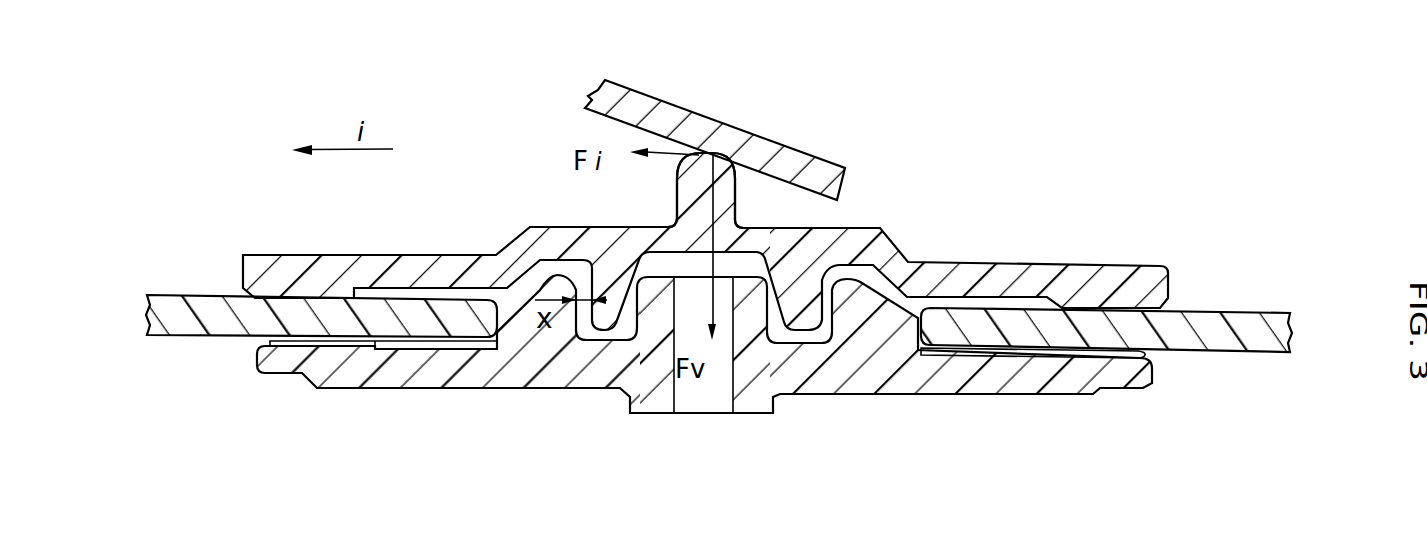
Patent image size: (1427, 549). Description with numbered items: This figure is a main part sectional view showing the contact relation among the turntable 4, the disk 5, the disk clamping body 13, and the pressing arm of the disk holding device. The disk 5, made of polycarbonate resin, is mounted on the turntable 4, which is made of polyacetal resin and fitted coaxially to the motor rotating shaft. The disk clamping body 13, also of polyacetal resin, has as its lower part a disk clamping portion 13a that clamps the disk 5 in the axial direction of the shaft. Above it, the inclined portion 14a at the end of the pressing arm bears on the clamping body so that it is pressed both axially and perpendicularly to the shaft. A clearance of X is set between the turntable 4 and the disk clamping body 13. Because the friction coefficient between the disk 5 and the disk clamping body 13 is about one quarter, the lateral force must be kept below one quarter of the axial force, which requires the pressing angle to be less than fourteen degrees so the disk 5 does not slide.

The inclined portion 14a is at (788, 144).
The disk clamping portion 13a is at (735, 182).
The disk clamping body 13 is at (1000, 263).
The disk 5 is at (1232, 311).
The turntable 4 is at (1153, 383).